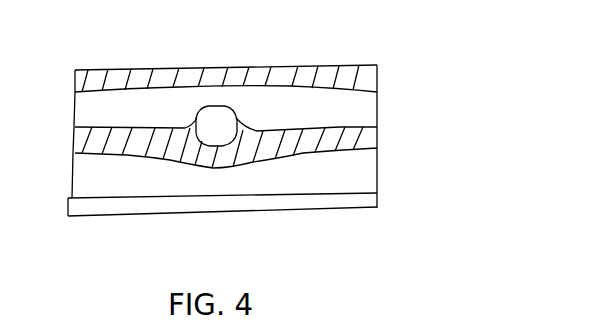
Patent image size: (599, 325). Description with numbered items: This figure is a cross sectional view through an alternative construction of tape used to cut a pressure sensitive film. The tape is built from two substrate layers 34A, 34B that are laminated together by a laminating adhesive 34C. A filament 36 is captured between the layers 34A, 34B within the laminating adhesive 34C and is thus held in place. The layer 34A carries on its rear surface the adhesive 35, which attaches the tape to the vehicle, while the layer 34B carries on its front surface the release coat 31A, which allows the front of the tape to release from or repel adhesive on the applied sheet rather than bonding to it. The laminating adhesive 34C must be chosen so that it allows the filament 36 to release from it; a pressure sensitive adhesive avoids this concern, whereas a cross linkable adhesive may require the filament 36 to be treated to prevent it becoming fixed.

The adhesive layer 35 is at (122, 72).
The filament 36 is at (218, 125).
The substrate layer 34A is at (365, 112).
The laminating adhesive 34C is at (357, 137).
The substrate layer 34B is at (363, 177).
The release coating 31A is at (332, 200).